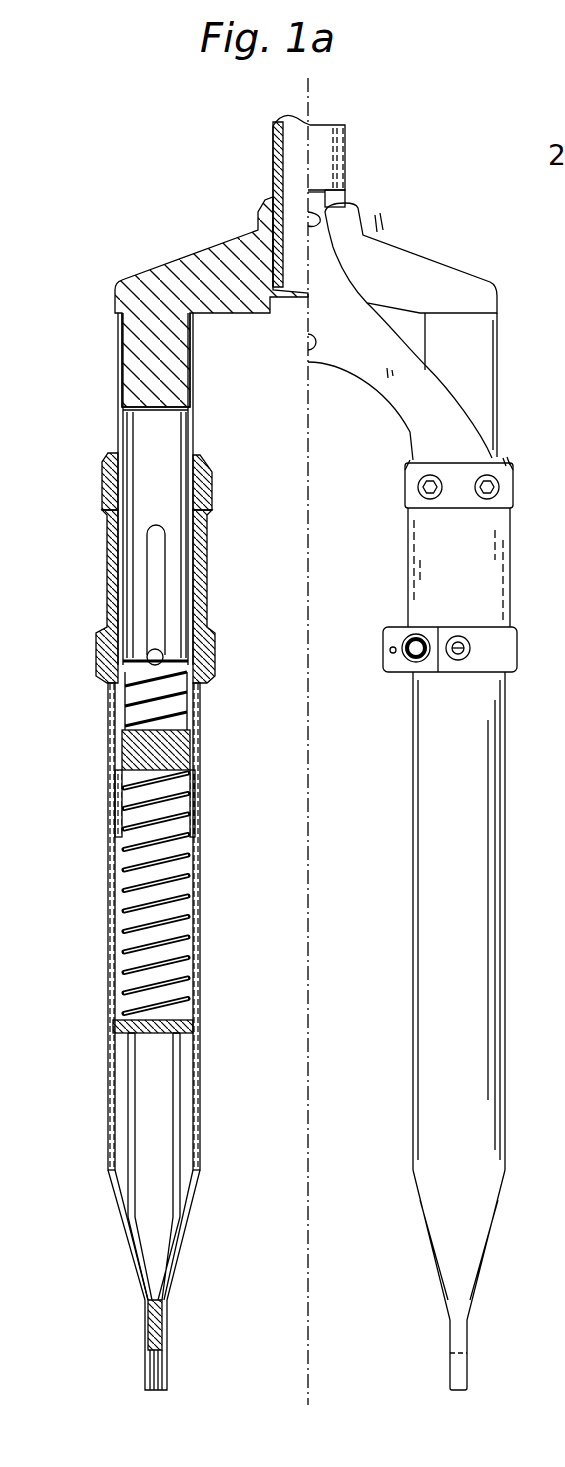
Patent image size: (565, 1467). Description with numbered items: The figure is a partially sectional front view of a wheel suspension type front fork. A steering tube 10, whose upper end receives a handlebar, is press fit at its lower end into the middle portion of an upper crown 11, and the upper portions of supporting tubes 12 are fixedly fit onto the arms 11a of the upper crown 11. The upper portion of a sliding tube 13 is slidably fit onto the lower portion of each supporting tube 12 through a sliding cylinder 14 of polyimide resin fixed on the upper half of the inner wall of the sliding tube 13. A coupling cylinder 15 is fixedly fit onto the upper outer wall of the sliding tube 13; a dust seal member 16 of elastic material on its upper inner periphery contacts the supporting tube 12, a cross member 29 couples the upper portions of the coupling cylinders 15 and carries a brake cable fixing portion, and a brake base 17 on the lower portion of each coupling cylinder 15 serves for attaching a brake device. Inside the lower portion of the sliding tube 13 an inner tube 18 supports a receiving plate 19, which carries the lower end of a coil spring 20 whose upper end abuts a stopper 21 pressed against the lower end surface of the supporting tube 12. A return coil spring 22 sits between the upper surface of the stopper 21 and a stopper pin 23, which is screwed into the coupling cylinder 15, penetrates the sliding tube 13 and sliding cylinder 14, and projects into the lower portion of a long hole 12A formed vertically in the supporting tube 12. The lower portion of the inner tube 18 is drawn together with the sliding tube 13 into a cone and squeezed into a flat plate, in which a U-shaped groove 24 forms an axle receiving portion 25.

The steering tube 10 is at (272, 140).
The upper crown 11 is at (182, 270).
The arm 11a is at (130, 370).
The supporting tube 12 is at (118, 423).
The long hole 12A is at (157, 613).
The sliding tube 13 is at (200, 880).
The sliding cylinder 14 is at (192, 803).
The coupling cylinder 15 is at (208, 573).
The dust seal member 16 is at (197, 450).
The brake base 17 is at (398, 663).
The inner tube 18 is at (182, 1105).
The receiving plate 19 is at (200, 1024).
The coil spring 20 is at (190, 922).
The stopper 21 is at (173, 753).
The return coil spring 22 is at (167, 707).
The stopper pin 23 is at (150, 648).
The U-shaped groove 24 is at (150, 1372).
The axle receiving portion 25 is at (458, 1332).
The cross member 29 is at (387, 377).